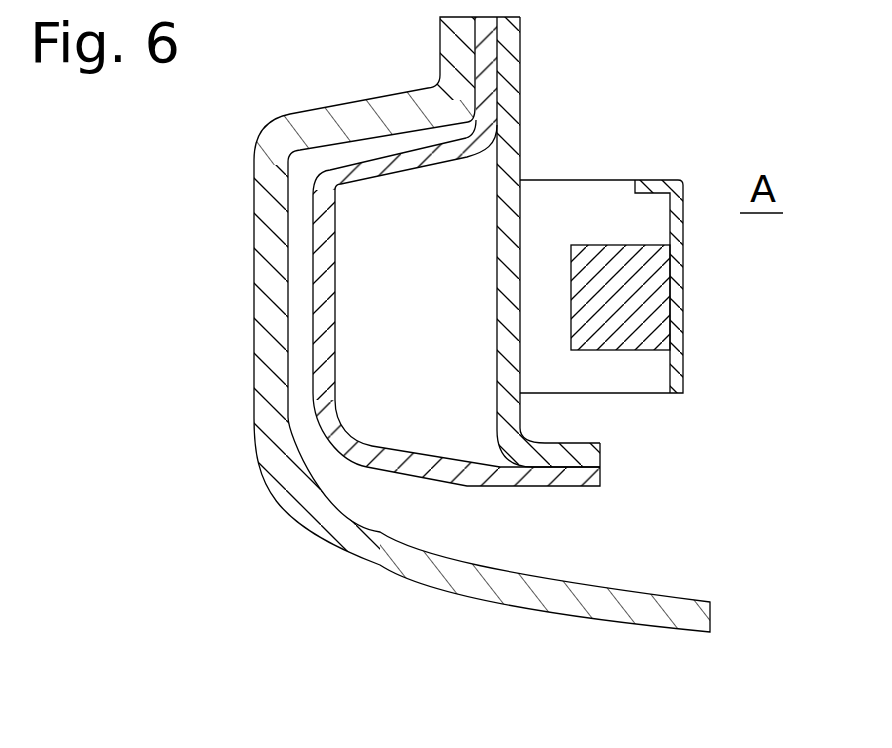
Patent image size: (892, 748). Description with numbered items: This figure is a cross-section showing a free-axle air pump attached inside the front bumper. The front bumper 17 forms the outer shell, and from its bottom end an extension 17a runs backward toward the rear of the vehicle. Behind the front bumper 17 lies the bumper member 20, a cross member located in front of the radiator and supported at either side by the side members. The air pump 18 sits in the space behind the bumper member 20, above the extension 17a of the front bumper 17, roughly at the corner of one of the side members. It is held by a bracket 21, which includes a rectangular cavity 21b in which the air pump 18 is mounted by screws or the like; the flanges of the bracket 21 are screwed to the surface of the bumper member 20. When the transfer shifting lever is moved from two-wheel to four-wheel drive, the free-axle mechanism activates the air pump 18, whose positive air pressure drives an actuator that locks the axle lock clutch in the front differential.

The front bumper 17 is at (447, 372).
The extension of front bumper 17a is at (560, 617).
The air pump 18 is at (617, 350).
The bumper member 20 is at (520, 58).
The bracket 21 is at (652, 241).
The rectangular cavity 21b is at (667, 218).